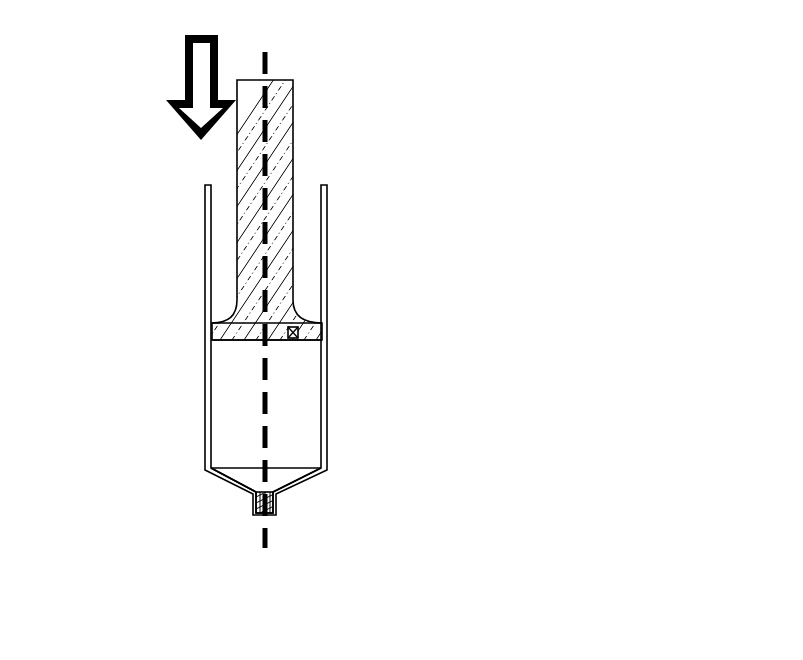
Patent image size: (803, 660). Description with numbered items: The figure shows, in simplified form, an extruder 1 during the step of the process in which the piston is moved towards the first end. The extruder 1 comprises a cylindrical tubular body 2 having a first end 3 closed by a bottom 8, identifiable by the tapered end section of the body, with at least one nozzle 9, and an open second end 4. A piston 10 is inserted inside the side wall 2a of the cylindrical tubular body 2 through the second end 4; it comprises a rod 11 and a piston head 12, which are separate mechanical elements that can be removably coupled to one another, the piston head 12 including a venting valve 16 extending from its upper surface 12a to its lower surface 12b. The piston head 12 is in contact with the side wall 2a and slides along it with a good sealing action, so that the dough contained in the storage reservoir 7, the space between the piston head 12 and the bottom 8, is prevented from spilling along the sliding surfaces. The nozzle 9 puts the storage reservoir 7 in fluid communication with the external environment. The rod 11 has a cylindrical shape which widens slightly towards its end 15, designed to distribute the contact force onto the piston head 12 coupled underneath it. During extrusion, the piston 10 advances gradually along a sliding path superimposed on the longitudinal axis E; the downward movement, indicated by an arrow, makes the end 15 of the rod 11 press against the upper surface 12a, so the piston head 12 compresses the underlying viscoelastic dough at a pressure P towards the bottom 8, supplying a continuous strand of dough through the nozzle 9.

The extruder 1 is at (550, 142).
The axis E is at (288, 70).
The piston 10 is at (330, 144).
The rod 11 is at (237, 171).
The end of the rod 15 is at (232, 283).
The piston head 12 is at (217, 327).
The upper surface 12a is at (329, 316).
The lower surface 12b is at (333, 341).
The venting valve 16 is at (324, 350).
The second end 4 is at (356, 190).
The cylindrical tubular body 2 is at (189, 428).
The side wall 2a is at (298, 369).
The first end 3 is at (363, 430).
The storage reservoir 7 is at (322, 446).
The bottom 8 is at (331, 497).
The nozzle 9 is at (234, 514).